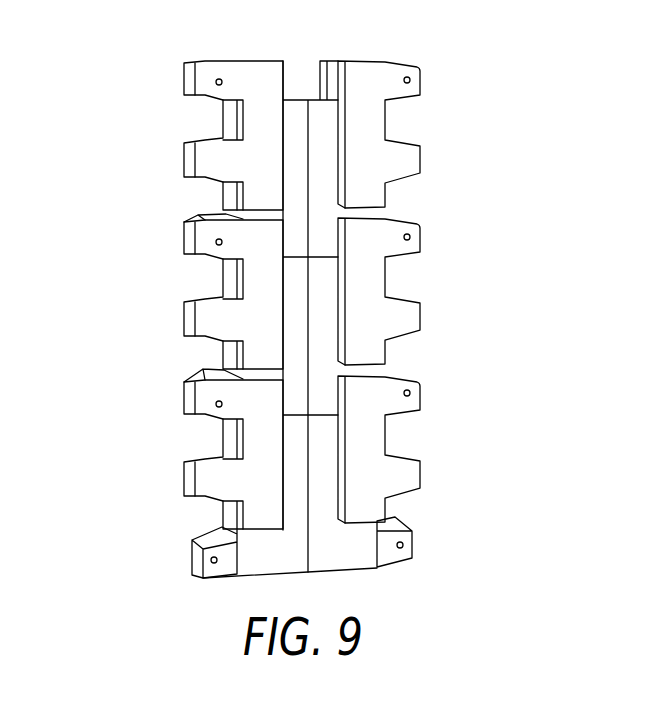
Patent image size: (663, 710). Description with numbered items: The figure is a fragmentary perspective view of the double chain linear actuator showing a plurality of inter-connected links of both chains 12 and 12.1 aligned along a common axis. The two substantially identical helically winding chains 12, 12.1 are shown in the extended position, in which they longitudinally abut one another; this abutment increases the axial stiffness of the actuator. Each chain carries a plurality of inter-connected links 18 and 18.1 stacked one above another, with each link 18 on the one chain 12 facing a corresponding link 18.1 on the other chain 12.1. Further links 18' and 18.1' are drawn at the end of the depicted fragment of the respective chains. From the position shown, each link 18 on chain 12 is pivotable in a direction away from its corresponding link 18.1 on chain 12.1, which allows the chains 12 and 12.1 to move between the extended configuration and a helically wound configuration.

The helically winding chain 12 is at (156, 190).
The helically winding chain 12.1 is at (440, 191).
The inter-connected link 18 is at (202, 291).
The inter-connected link 18.1 is at (420, 291).
The end module of first stack 18' is at (186, 556).
The end module of second stack 18.1' is at (430, 542).